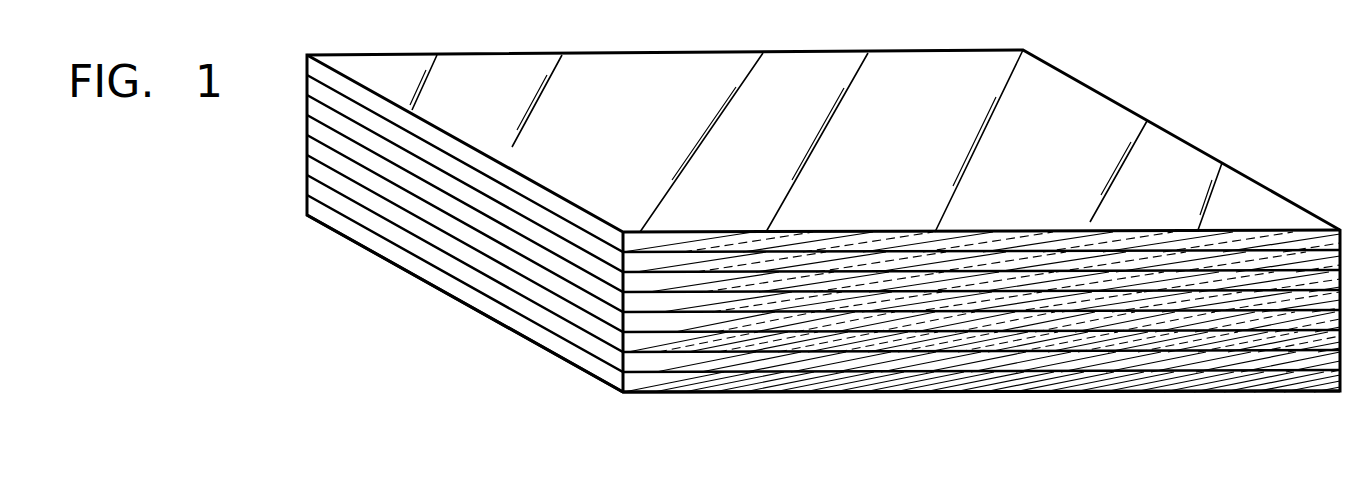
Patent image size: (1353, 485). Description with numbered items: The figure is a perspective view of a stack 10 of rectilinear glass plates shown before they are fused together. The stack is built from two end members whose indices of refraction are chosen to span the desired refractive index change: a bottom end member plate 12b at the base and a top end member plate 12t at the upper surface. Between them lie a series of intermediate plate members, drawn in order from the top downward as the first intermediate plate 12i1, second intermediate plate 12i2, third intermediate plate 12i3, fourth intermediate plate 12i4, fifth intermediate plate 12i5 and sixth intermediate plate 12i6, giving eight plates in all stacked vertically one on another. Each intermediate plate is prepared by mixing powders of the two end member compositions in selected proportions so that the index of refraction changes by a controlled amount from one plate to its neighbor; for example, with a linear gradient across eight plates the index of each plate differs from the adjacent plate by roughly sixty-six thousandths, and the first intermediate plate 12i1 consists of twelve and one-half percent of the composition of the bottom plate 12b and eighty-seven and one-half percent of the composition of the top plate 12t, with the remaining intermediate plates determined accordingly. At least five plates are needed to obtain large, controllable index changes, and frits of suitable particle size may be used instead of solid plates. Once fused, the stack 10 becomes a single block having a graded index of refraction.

The stack 10 is at (1075, 117).
The top end member plate 12t is at (360, 95).
The sixth intermediate plate member 12i6 is at (389, 131).
The fifth intermediate plate member 12i5 is at (413, 164).
The fourth intermediate plate member 12i4 is at (439, 199).
The third intermediate plate member 12i3 is at (466, 234).
The second intermediate plate member 12i2 is at (493, 269).
The first intermediate plate member 12i1 is at (519, 303).
The bottom end member plate 12b is at (544, 337).